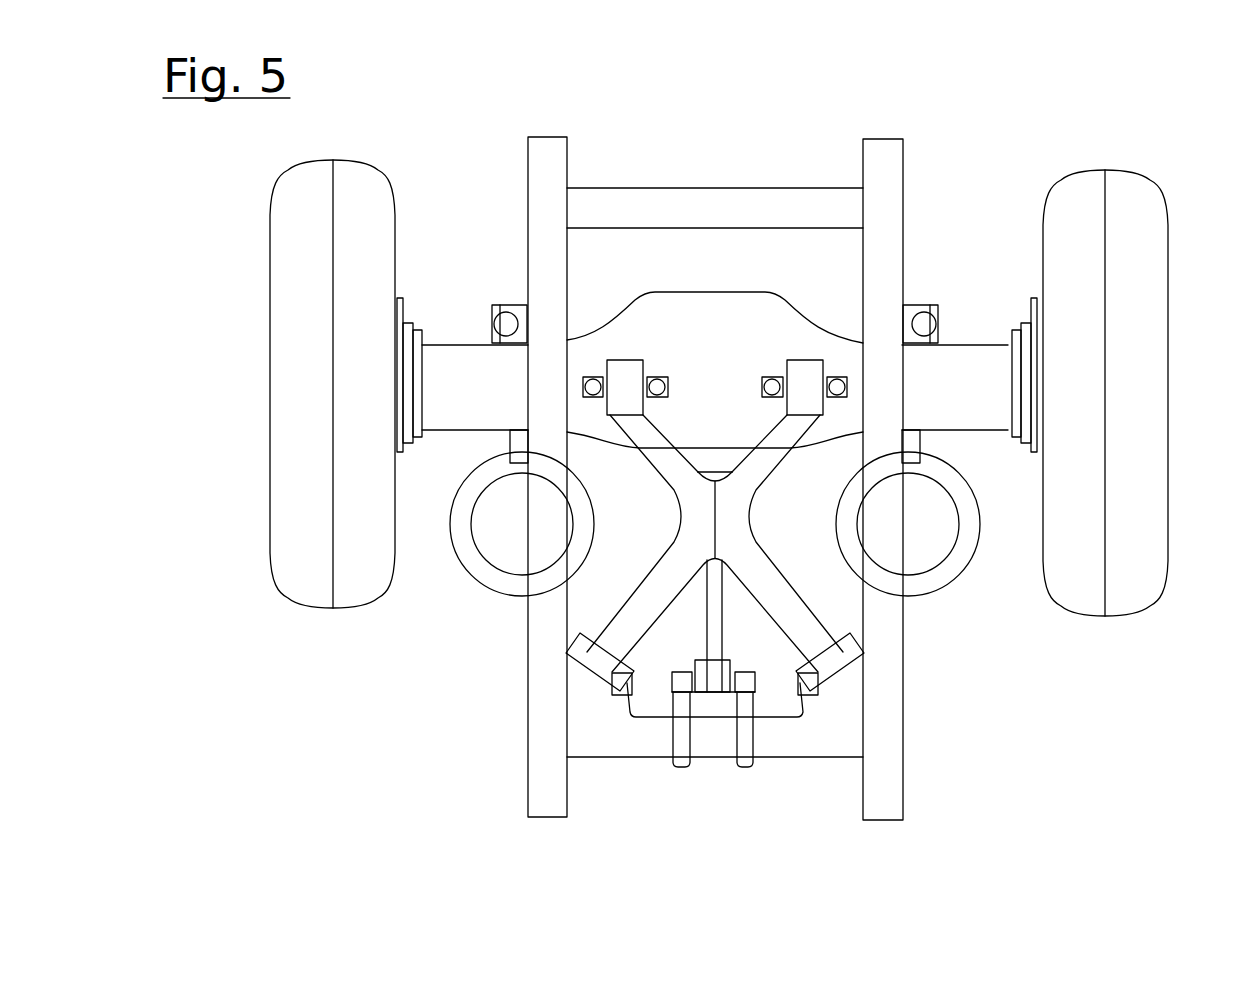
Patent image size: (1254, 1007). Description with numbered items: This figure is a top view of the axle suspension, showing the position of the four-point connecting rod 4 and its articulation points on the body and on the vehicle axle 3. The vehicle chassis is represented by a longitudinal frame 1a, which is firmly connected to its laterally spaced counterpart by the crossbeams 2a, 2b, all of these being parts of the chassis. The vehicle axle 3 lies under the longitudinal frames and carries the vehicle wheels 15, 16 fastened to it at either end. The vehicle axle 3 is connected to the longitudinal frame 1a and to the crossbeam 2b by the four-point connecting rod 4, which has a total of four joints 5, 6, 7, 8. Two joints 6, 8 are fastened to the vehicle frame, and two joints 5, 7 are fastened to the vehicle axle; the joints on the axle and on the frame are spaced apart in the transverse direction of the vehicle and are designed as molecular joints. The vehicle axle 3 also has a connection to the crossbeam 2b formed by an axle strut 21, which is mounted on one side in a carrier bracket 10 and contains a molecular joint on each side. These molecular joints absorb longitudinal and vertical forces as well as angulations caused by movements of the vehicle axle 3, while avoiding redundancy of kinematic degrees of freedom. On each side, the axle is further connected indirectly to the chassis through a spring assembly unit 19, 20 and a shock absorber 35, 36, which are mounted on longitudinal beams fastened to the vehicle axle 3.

The longitudinal frame 1a is at (877, 645).
The crossbeam 2a is at (820, 198).
The crossbeam 2b is at (782, 727).
The vehicle axle 3 is at (692, 357).
The four-point connecting rod 4 is at (758, 572).
The joint 5 is at (805, 377).
The joint 6 is at (840, 680).
The joint 7 is at (620, 387).
The joint 8 is at (583, 673).
The carrier bracket 10 is at (747, 740).
The vehicle wheel 15 is at (308, 555).
The vehicle wheel 16 is at (1137, 255).
The spring assembly unit 19 is at (487, 582).
The spring assembly unit 20 is at (945, 570).
The axle strut 21 is at (713, 633).
The shock absorber 35 is at (490, 303).
The shock absorber 36 is at (938, 303).